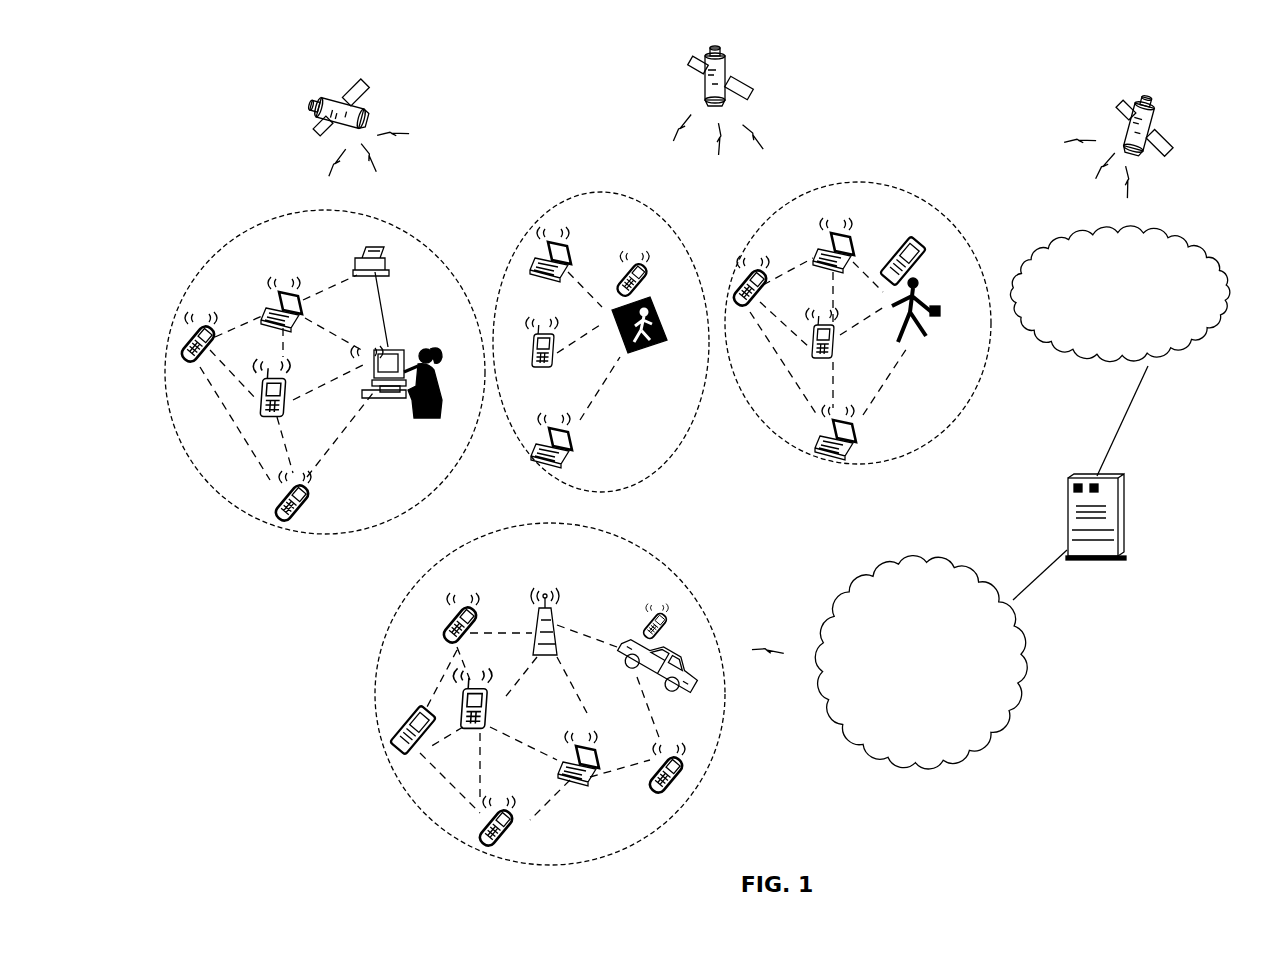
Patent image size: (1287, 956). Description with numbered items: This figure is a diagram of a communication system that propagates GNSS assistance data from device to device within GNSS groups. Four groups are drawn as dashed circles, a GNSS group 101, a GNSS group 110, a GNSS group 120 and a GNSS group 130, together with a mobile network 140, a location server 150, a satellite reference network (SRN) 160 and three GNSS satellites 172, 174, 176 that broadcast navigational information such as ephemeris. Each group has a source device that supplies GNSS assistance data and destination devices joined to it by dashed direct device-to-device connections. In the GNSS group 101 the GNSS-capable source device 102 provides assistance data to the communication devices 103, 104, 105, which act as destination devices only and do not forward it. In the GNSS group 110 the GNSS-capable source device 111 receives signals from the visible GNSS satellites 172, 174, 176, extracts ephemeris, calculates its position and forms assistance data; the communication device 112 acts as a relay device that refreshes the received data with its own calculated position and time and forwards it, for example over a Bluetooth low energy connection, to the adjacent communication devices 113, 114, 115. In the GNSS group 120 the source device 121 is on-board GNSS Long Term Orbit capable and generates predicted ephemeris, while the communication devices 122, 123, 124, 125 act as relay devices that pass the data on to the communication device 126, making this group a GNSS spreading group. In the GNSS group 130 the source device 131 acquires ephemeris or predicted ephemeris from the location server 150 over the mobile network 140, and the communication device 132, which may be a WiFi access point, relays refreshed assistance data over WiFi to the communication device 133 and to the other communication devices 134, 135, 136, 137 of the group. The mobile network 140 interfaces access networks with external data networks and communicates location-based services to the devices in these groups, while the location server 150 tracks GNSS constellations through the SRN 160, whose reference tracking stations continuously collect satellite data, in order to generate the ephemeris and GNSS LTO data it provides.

The GNSS group 101 is at (692, 244).
The pedestrian GNSS-enabled mobile device 102 is at (637, 254).
The communication device 103 is at (557, 339).
The communication device 104 is at (579, 450).
The communication device 105 is at (581, 254).
The GNSS group 110 is at (967, 230).
The source device 111 is at (916, 248).
The communication device 112 is at (858, 244).
The communication device 113 is at (840, 331).
The communication device 114 is at (856, 444).
The communication device 115 is at (774, 272).
The GNSS group 120 is at (447, 262).
The source device 121 is at (387, 345).
The communication device 122 is at (290, 290).
The communication device 123 is at (286, 386).
The communication device 124 is at (309, 509).
The communication device 125 is at (394, 274).
The communication device 126 is at (226, 324).
The GNSS group 130 is at (616, 538).
The source device 131 is at (654, 608).
The communication device 132 is at (557, 617).
The communication device 133 is at (485, 608).
The handheld device 134 is at (490, 688).
The laptop computer 135 is at (600, 760).
The mobile phone 136 is at (509, 814).
The mobile device 137 is at (408, 720).
The mobile network 140 is at (971, 572).
The location server 150 is at (1128, 502).
The satellite reference network (SRN) 160 is at (1229, 280).
The GNSS satellite 172 is at (341, 88).
The GNSS satellite 174 is at (733, 70).
The GNSS satellite 176 is at (1167, 102).